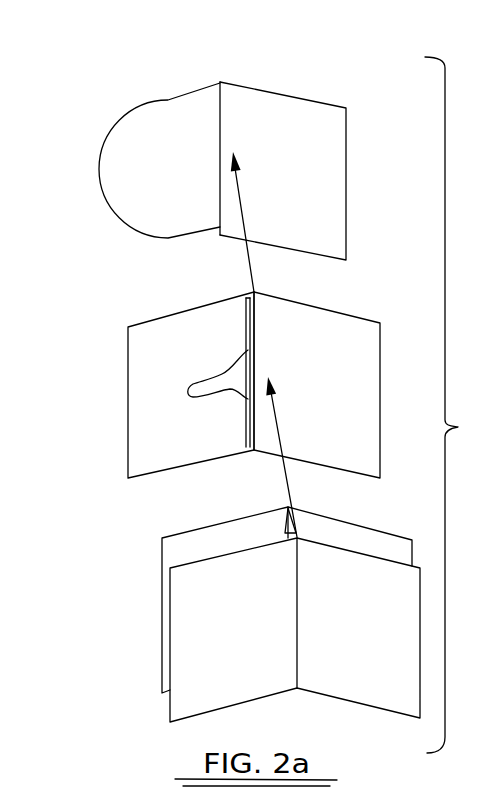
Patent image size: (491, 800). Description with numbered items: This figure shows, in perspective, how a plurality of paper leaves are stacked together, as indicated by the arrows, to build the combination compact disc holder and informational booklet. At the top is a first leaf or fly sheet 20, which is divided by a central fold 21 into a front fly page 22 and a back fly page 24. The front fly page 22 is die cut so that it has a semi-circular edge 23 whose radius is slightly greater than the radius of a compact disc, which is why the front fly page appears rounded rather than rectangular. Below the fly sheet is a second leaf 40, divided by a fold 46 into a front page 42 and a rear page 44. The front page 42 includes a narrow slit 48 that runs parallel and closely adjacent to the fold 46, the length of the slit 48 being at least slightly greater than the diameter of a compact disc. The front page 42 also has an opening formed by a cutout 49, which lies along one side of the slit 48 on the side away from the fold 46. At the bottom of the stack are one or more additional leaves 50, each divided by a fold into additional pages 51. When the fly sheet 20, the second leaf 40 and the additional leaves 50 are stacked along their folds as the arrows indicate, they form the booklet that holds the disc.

The first leaf or fly sheet 20 is at (215, 138).
The central fold 21 is at (220, 80).
The front fly page 22 is at (132, 173).
The semi-circular edge 23 is at (96, 246).
The back fly page 24 is at (318, 110).
The second leaf 40 is at (240, 370).
The front page 42 is at (137, 430).
The rear page 44 is at (347, 331).
The fold 46 is at (257, 291).
The narrow slit 48 is at (246, 324).
The cutout 49 is at (186, 383).
The additional leaves 50 is at (157, 612).
The additional pages 51 is at (295, 630).